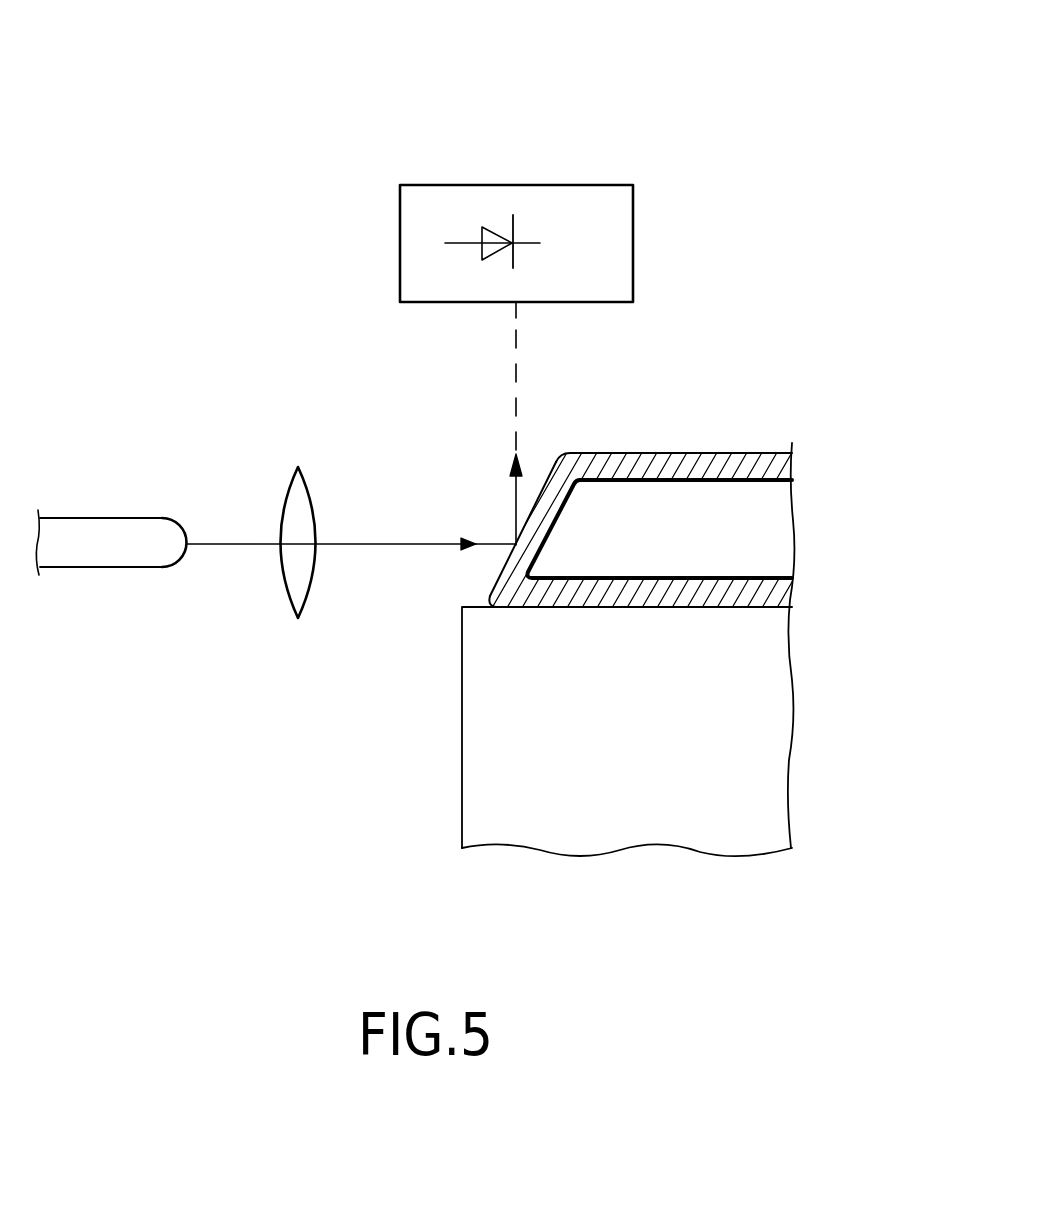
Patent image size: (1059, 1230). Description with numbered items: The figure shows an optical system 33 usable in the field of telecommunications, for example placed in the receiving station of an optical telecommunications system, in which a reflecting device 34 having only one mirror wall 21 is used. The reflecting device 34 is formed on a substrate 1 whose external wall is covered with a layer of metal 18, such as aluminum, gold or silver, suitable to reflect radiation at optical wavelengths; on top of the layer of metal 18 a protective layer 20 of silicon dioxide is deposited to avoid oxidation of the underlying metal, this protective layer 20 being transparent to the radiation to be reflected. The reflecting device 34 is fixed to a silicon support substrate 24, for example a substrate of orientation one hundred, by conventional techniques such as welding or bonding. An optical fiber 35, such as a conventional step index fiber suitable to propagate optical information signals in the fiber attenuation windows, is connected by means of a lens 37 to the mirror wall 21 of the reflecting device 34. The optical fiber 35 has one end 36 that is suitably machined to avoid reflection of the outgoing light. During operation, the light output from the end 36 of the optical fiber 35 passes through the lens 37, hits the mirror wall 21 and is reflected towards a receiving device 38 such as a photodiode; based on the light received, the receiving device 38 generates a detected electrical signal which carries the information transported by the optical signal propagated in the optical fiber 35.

The substrate 1 is at (618, 549).
The layer of metal 18 is at (708, 458).
The protective layer 20 is at (755, 455).
The mirror wall 21 is at (548, 465).
The silicon support substrate 24 is at (775, 760).
The optical system 33 is at (428, 136).
The reflecting device 34 is at (637, 440).
The optical fiber 35 is at (55, 557).
The end 36 is at (157, 557).
The lens 37 is at (307, 602).
The receiving device 38 is at (613, 183).